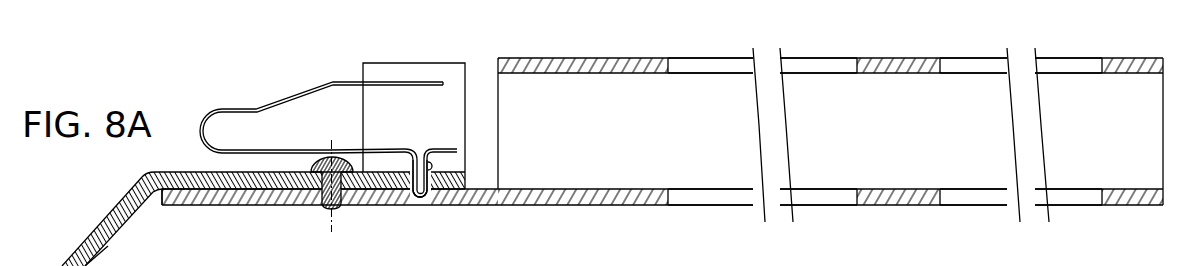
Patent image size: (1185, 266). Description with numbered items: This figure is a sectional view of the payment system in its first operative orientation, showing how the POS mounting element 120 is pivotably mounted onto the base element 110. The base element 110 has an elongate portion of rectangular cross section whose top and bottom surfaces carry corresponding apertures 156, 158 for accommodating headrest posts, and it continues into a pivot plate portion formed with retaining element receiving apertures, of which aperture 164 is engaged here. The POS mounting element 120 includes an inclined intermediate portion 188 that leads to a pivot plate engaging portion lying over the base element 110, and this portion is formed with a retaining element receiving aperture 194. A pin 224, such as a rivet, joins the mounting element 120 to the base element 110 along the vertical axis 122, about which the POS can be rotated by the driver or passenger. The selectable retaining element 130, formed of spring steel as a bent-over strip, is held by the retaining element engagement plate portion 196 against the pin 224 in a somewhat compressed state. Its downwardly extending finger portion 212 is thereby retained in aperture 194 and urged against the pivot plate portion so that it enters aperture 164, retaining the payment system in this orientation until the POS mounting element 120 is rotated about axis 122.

The base element 110 is at (586, 57).
The POS mounting element 120 is at (84, 237).
The vertical axis 122 is at (331, 228).
The selectable retaining element 130 is at (271, 101).
The aperture 156 is at (697, 63).
The aperture 158 is at (970, 63).
The retaining element receiving aperture 164 is at (421, 207).
The inclined intermediate portion 188 is at (108, 246).
The retaining element receiving aperture 194 is at (426, 164).
The retaining element engagement plate portion 196 is at (400, 63).
The finger portion 212 is at (425, 148).
The pin 224 is at (313, 206).